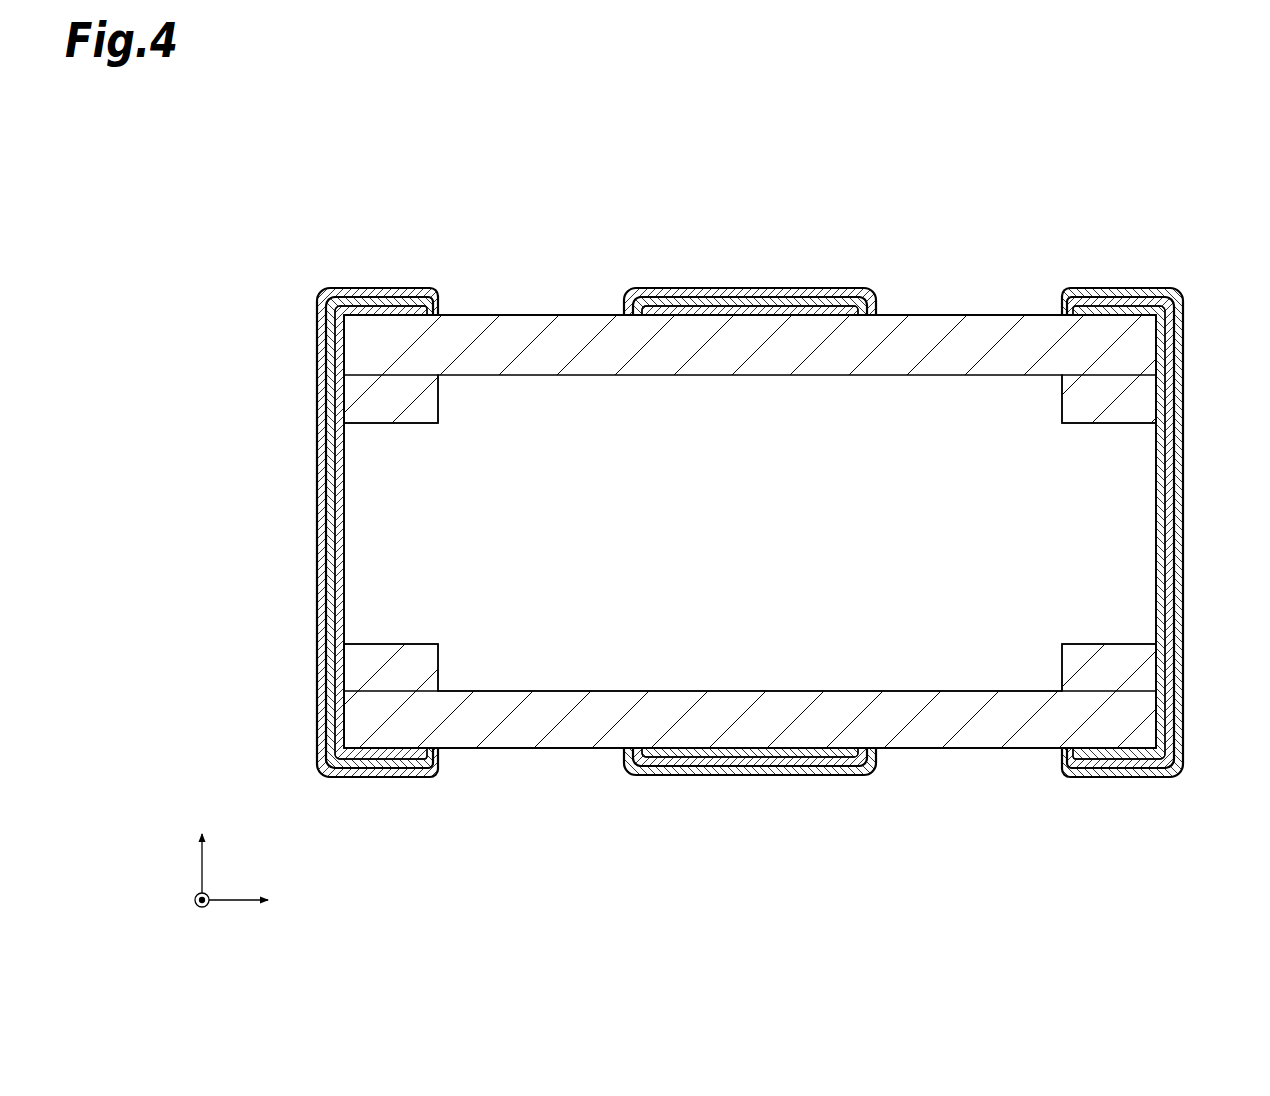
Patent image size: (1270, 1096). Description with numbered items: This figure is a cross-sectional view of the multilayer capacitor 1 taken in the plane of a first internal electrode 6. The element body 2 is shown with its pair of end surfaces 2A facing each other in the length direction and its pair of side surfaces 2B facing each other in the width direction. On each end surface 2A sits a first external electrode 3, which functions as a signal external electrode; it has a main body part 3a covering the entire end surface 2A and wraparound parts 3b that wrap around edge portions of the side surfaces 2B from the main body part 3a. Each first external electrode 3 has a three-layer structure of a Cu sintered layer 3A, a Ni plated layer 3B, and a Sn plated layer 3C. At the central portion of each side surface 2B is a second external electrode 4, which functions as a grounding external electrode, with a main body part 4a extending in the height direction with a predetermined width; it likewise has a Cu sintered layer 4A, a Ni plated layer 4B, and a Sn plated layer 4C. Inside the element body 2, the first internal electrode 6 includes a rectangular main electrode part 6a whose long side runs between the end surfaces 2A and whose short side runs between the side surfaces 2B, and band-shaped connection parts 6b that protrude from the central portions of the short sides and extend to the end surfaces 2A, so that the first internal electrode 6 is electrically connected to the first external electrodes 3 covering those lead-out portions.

The multilayer capacitor 1 is at (320, 170).
The element body 2 is at (500, 298).
The end surface 2A is at (343, 600).
The side surface 2B is at (573, 313).
The first external electrode 3 is at (302, 512).
The Cu sintered layer 3A is at (340, 650).
The Ni plated layer 3B is at (331, 680).
The Sn plated layer 3C is at (322, 708).
The main body part 3a is at (319, 550).
The wraparound part 3b is at (392, 288).
The second external electrode 4 is at (629, 280).
The Cu sintered layer 4A is at (757, 308).
The Ni plated layer 4B is at (810, 301).
The Sn plated layer 4C is at (860, 289).
The main body part 4a is at (690, 289).
The first internal electrode 6 is at (893, 360).
The main electrode part 6a is at (892, 613).
The connection part 6b is at (390, 480).